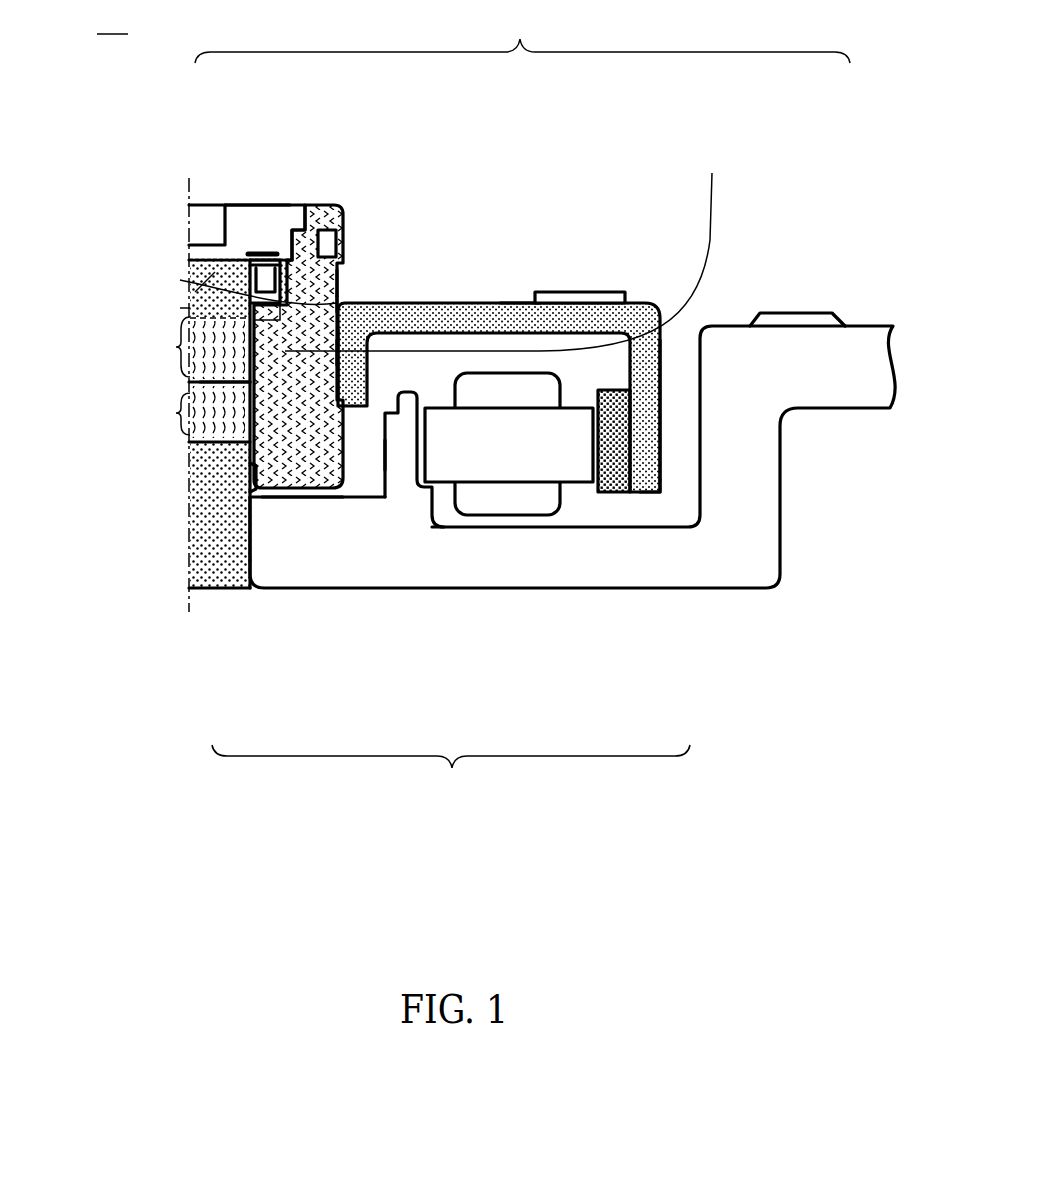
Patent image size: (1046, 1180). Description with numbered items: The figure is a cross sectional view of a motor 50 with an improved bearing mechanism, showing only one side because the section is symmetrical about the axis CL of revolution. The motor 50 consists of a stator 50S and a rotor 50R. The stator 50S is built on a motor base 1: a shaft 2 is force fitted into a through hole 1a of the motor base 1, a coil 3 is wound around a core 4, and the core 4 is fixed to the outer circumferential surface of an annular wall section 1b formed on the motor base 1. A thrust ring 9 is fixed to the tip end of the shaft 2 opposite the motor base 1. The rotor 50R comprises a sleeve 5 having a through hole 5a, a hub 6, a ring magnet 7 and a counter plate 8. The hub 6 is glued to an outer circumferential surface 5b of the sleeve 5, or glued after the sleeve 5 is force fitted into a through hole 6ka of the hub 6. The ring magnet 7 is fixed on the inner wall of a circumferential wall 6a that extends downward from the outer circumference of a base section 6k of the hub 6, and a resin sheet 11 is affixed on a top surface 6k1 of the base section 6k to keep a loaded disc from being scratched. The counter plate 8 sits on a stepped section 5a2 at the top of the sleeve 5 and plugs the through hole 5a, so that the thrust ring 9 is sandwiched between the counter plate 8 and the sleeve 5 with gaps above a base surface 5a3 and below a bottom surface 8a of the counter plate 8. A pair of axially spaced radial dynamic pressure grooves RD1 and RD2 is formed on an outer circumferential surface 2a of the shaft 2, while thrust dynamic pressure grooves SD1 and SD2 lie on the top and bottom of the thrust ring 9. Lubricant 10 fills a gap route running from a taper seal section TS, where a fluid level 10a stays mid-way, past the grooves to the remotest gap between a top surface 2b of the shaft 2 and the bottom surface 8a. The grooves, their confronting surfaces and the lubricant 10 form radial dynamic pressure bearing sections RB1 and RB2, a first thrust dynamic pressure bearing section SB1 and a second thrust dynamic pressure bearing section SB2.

The motor 50 is at (112, 17).
The rotor 50R is at (548, 34).
The stator 50S is at (478, 796).
The motor base 1 is at (677, 560).
The through hole 1a is at (251, 553).
The annular wall section 1b is at (403, 433).
The shaft 2 is at (212, 565).
The outer circumferential surface 2a is at (190, 385).
The top surface 2b is at (205, 283).
The coil 3 is at (507, 497).
The core 4 is at (570, 452).
The sleeve 5 is at (309, 205).
The through hole 5a is at (330, 354).
The stepped section 5a2 is at (341, 212).
The base surface 5a3 is at (340, 305).
The outer circumferential surface 5b is at (338, 288).
The hub 6 is at (485, 312).
The circumferential wall 6a is at (650, 462).
The base section 6k is at (652, 303).
The top surface 6k1 is at (520, 308).
The through hole 6ka is at (347, 340).
The ring magnet 7 is at (630, 413).
The counter plate 8 is at (248, 240).
The bottom surface 8a is at (234, 245).
The thrust ring 9 is at (321, 300).
The lubricant 10 is at (252, 452).
The fluid level 10a is at (252, 465).
The sheet 11 is at (581, 296).
The axis of revolution CL is at (188, 381).
The first thrust dynamic pressure bearing section SB1 is at (263, 250).
The second thrust dynamic pressure bearing section SB2 is at (187, 315).
The thrust dynamic pressure groove SD1 is at (180, 280).
The thrust dynamic pressure groove SD2 is at (180, 308).
The radial dynamic pressure groove RD1 is at (175, 347).
The radial dynamic pressure groove RD2 is at (176, 413).
The radial dynamic pressure bearing section RB1 is at (513, 247).
The radial dynamic pressure bearing section RB2 is at (360, 440).
The taper seal section TS is at (256, 500).